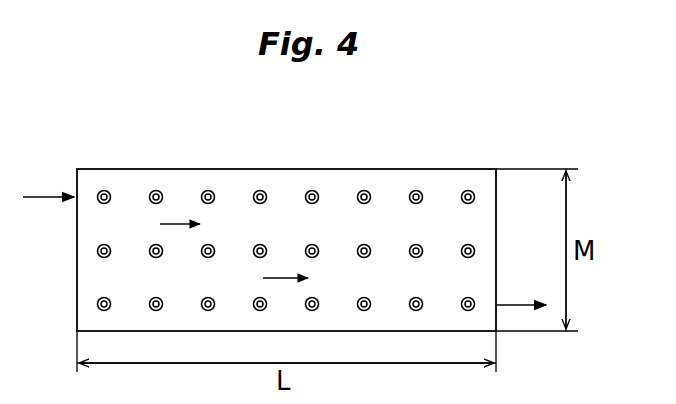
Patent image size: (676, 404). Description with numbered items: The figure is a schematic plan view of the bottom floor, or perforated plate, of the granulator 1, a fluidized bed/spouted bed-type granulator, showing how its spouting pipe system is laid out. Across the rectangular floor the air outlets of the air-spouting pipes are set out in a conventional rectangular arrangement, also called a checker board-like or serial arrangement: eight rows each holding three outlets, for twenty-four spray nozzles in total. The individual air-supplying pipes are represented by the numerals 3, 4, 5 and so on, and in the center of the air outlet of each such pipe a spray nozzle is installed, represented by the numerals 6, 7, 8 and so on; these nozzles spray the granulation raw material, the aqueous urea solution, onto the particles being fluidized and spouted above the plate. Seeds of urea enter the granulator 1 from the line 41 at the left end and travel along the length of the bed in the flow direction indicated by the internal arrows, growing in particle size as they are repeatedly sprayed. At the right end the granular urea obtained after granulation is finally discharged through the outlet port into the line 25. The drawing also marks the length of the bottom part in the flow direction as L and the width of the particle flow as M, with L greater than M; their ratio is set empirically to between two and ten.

The granulator 1 is at (414, 169).
The air-supplying pipe 3 is at (98, 306).
The air-supplying pipe 4 is at (98, 253).
The air-supplying pipe 5 is at (108, 191).
The spray nozzle 6 is at (101, 309).
The spray nozzle 7 is at (99, 256).
The spray nozzle 8 is at (98, 192).
The line 25 is at (512, 304).
The line 41 is at (42, 198).